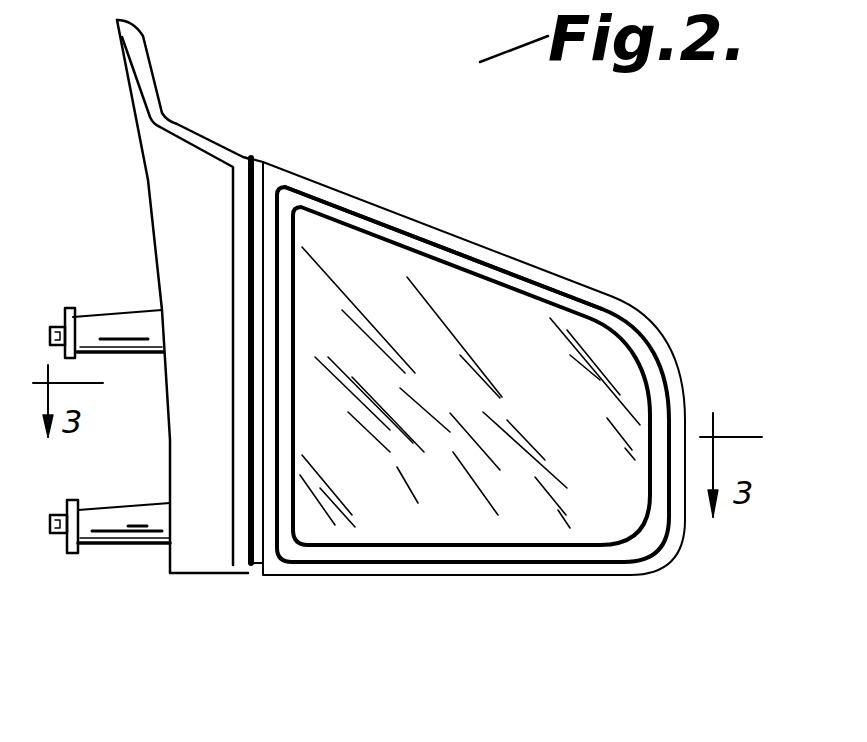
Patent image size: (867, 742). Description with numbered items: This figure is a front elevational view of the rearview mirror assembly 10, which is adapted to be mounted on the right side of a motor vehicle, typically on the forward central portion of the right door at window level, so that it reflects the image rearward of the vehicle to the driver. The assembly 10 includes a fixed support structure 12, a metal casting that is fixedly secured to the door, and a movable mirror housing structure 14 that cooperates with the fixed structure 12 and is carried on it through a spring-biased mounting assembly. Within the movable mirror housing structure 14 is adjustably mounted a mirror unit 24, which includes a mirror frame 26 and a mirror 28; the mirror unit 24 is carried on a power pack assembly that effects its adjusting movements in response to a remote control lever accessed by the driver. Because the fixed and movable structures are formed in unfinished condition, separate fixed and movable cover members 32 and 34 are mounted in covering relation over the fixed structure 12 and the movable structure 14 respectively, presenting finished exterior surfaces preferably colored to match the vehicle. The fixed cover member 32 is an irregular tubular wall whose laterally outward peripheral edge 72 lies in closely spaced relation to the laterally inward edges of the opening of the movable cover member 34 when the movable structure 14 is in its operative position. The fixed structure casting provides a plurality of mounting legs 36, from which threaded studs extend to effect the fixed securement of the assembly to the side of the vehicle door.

The rearview mirror assembly 10 is at (453, 218).
The fixed support structure 12 is at (129, 310).
The movable mirror housing structure 14 is at (257, 163).
The mirror unit 24 is at (663, 368).
The mirror frame 26 is at (658, 408).
The mirror 28 is at (413, 537).
The fixed cover member 32 is at (178, 208).
The movable cover member 34 is at (400, 170).
The mounting legs 36 is at (140, 352).
The laterally outward peripheral edge 72 is at (253, 480).